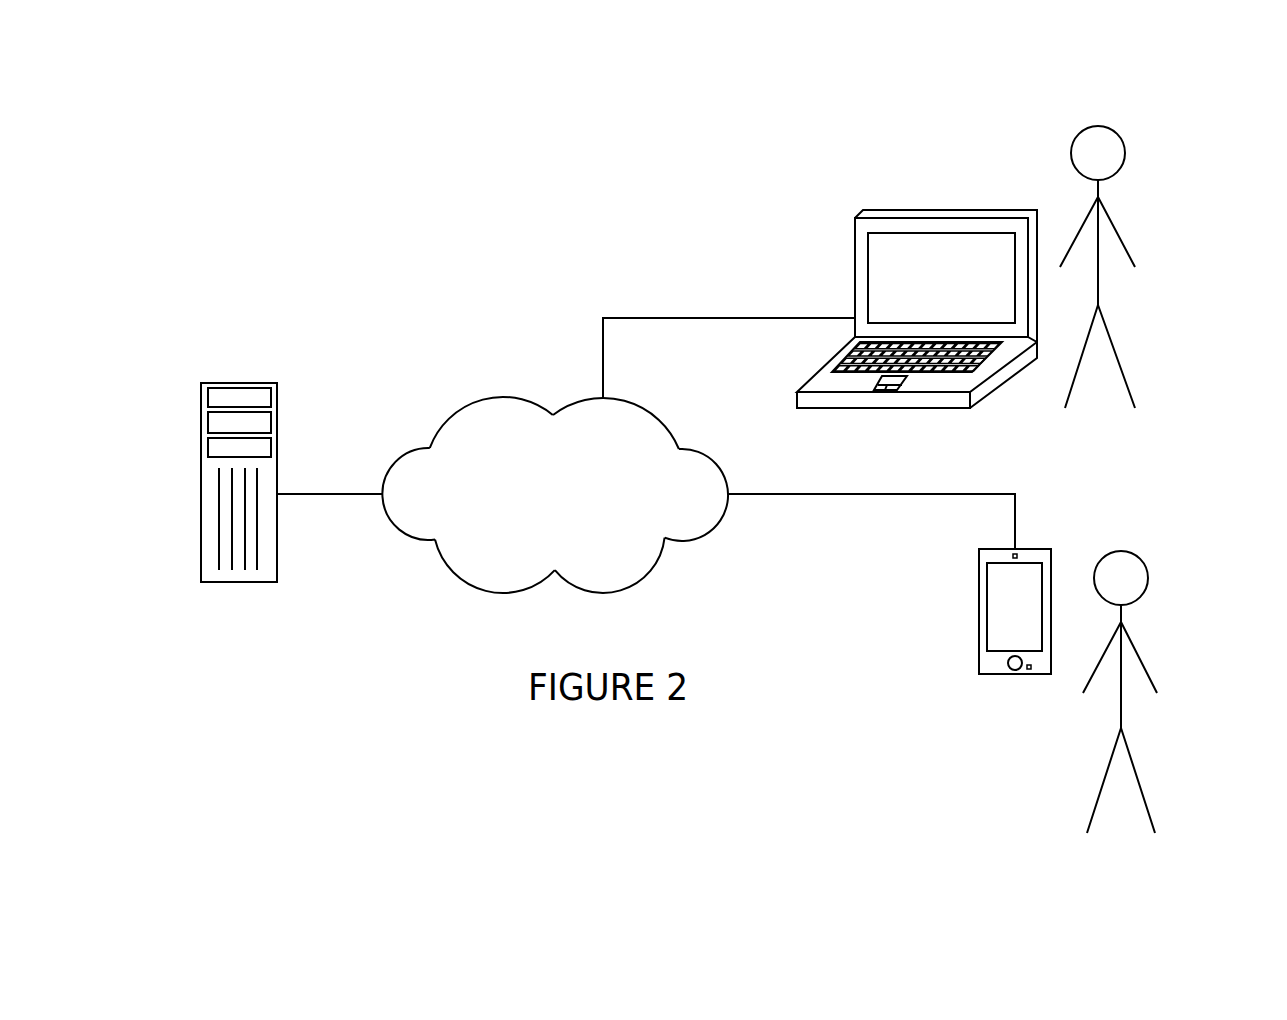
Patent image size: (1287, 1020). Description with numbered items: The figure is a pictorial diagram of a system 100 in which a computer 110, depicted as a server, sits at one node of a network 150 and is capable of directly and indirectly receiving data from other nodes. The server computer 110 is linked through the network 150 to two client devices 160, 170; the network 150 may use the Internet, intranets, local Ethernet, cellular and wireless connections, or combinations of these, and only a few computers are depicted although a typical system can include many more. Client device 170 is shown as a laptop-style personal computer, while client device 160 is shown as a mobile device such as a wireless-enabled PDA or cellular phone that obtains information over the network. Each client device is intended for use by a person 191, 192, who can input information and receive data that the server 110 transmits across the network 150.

The system 100 is at (248, 80).
The computer 110 is at (201, 393).
The network 150 is at (505, 397).
The client device 160 is at (979, 570).
The client device 170 is at (855, 253).
The person 191 is at (1123, 212).
The person 192 is at (1147, 620).